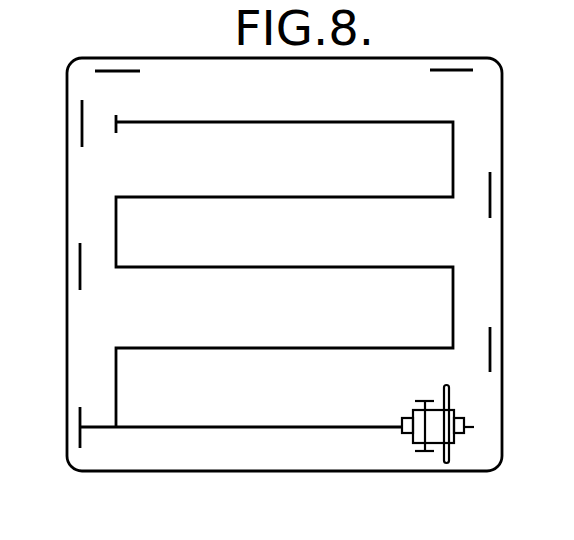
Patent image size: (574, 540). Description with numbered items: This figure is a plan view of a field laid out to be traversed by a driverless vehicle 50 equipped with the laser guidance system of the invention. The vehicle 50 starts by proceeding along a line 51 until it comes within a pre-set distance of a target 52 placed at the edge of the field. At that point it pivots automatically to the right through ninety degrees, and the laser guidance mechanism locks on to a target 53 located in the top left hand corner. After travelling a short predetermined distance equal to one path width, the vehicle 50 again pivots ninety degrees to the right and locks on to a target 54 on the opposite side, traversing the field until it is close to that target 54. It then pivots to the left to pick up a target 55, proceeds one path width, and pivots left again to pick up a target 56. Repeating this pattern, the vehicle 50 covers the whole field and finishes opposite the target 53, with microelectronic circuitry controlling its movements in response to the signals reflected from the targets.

The vehicle 50 is at (466, 431).
The line 51 is at (263, 430).
The target 52 is at (80, 418).
The target 53 is at (112, 71).
The target 54 is at (492, 352).
The target 55 is at (455, 70).
The target 56 is at (80, 262).